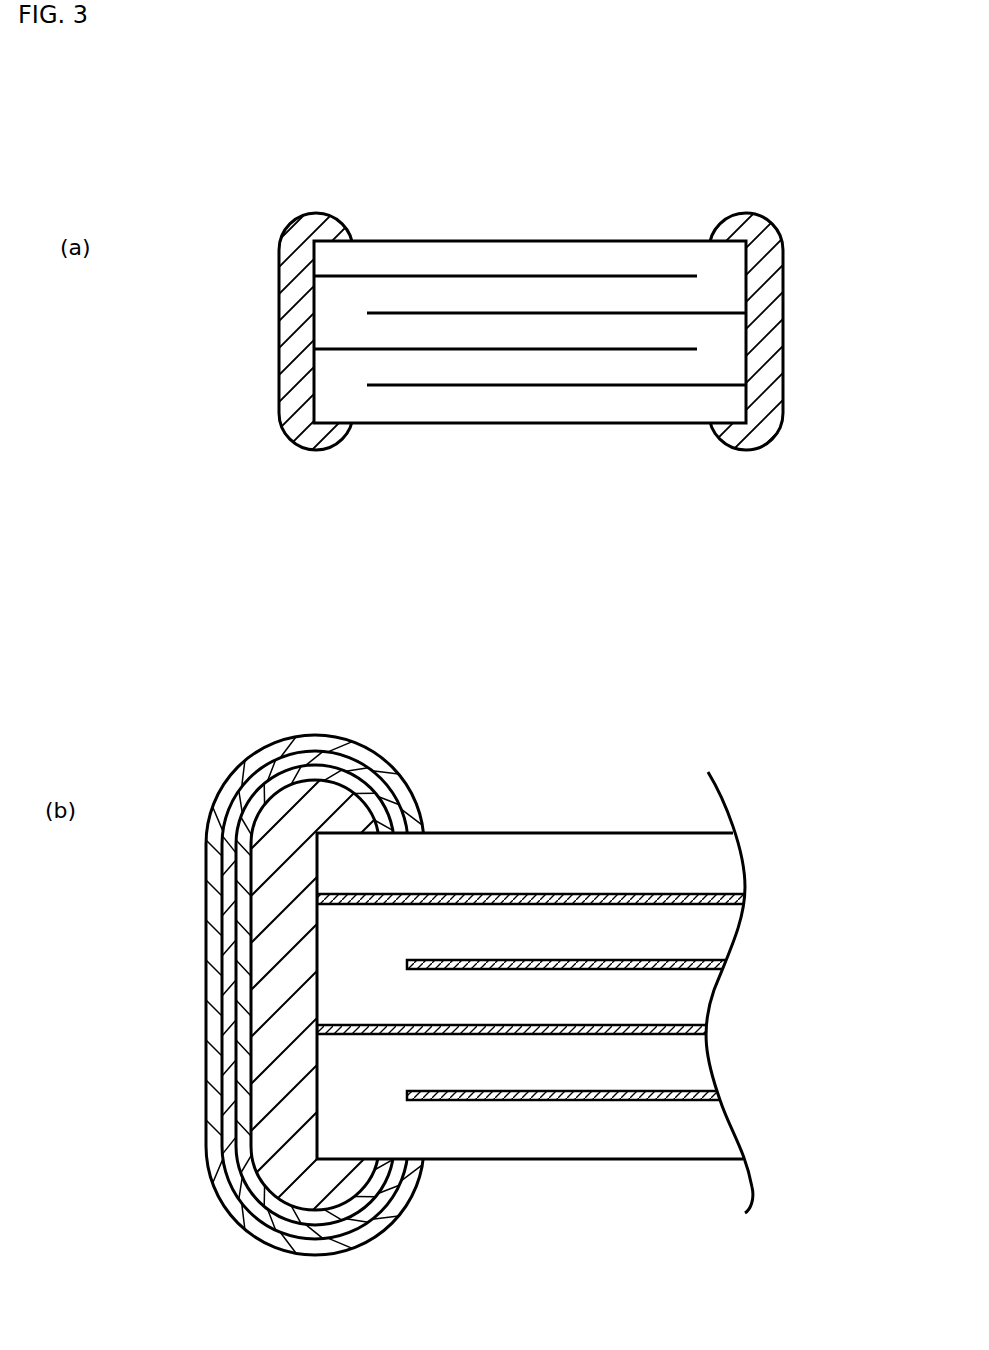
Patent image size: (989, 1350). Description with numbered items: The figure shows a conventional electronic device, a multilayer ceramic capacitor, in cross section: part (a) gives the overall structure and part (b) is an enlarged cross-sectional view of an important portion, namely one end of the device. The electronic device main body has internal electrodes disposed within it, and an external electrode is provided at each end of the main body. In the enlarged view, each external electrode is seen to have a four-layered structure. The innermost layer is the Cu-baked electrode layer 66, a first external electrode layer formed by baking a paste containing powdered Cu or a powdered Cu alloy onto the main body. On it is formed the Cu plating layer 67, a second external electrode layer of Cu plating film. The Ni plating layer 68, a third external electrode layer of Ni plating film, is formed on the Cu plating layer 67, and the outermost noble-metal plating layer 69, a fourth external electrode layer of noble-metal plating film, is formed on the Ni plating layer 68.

The Cu-baked electrode layer 66 is at (280, 893).
The Cu plating layer 67 is at (243, 950).
The Ni plating layer 68 is at (227, 1010).
The noble-metal plating layer 69 is at (213, 1092).